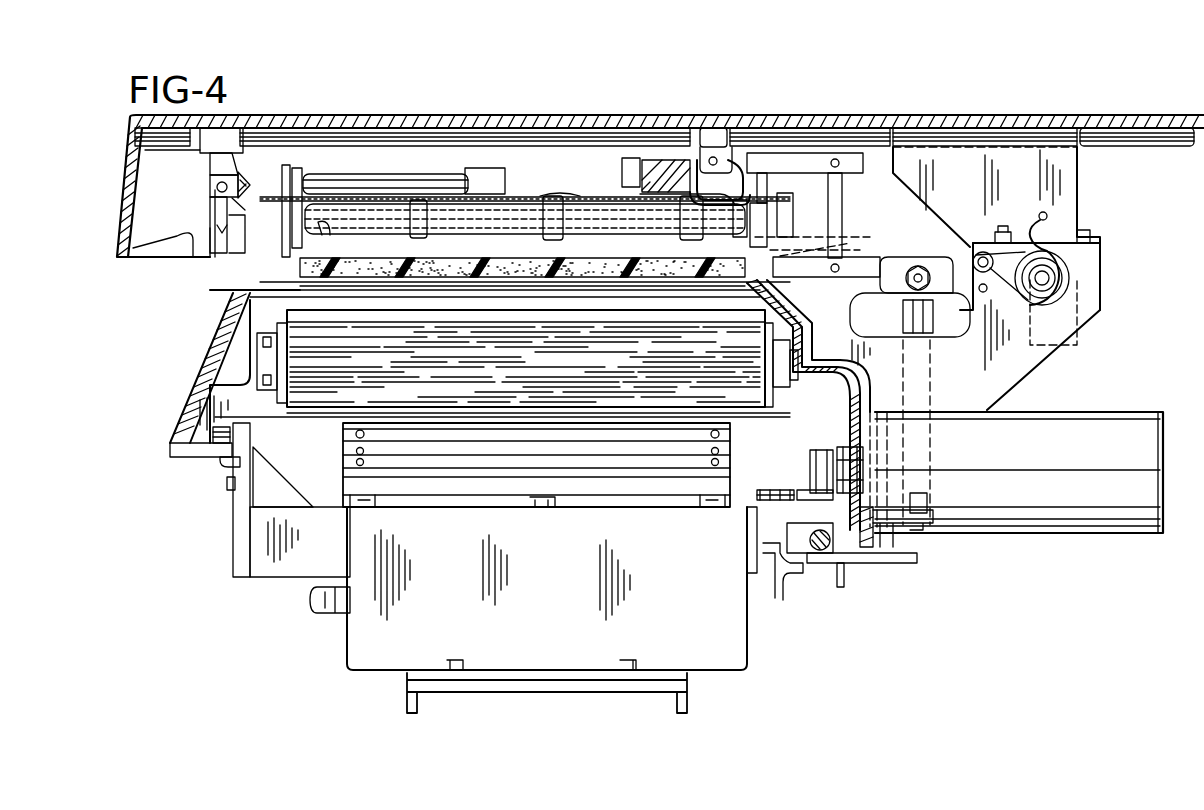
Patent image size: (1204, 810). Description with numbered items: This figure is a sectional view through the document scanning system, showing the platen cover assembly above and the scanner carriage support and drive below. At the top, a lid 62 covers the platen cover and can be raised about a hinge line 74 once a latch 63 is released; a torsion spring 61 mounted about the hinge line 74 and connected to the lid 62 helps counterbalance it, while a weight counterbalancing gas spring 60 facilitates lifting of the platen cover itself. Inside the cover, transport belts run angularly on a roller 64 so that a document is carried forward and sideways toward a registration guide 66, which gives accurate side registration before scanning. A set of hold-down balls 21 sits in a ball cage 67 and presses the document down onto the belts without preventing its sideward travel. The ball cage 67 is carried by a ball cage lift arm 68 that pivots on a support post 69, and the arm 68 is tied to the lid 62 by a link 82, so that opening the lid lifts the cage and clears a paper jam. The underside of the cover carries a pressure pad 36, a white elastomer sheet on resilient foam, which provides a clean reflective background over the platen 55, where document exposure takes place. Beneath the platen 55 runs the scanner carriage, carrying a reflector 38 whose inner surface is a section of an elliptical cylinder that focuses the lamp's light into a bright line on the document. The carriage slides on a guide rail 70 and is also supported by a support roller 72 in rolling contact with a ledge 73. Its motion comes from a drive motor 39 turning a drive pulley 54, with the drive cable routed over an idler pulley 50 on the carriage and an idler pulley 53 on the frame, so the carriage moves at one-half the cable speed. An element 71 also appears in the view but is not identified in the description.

The lid 62 is at (436, 114).
The latch 63 is at (208, 193).
The roller 64 is at (368, 215).
The hold-down balls 21 is at (635, 197).
The ball cage 67 is at (645, 158).
The ball cage lift arm 68 is at (700, 150).
The registration guide 66 is at (738, 185).
The link 82 is at (795, 160).
The support post 69 is at (838, 210).
The torsion spring 61 is at (1038, 212).
The hinge line 74 is at (1050, 278).
The pressure pad 36 is at (233, 296).
The gas spring 60 is at (905, 312).
The platen 55 is at (397, 288).
The reflector 38 is at (312, 395).
The ledge 73 is at (178, 455).
The support roller 72 is at (212, 466).
The drive motor 39 is at (1105, 412).
The drive pulley 54 is at (848, 445).
The idler pulley 53 is at (810, 455).
The idler pulley 50 is at (785, 490).
The guide rail 70 is at (825, 560).
The bracket 71 is at (777, 598).